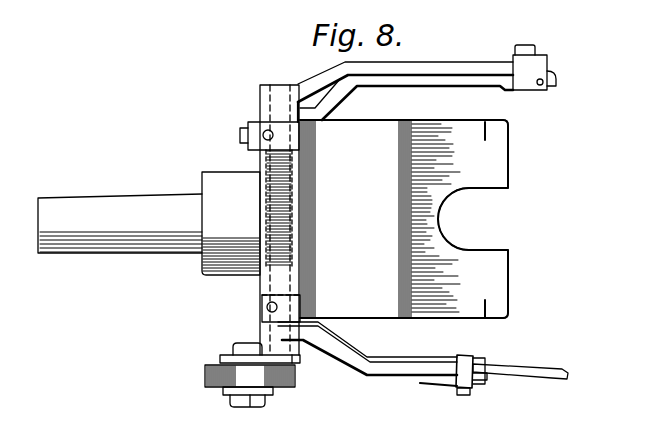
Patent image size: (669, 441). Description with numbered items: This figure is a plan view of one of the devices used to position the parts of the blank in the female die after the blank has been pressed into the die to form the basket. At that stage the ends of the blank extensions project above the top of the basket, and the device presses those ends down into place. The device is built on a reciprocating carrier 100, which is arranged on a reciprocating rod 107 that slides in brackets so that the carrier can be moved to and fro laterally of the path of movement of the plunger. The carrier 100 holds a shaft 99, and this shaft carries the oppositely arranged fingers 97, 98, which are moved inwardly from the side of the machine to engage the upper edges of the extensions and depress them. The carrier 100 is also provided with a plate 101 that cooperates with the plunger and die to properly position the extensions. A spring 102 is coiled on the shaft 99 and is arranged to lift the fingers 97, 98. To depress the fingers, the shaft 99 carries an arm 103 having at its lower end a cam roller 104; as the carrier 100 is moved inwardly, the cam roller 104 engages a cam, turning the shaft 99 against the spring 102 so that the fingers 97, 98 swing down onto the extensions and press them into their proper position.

The finger 97 is at (413, 370).
The finger 98 is at (539, 67).
The shaft 99 is at (277, 107).
The reciprocating carrier 100 is at (235, 258).
The plate 101 is at (500, 165).
The spring 102 is at (266, 192).
The arm 103 is at (295, 360).
The cam roller 104 is at (223, 370).
The reciprocating rod 107 is at (88, 230).